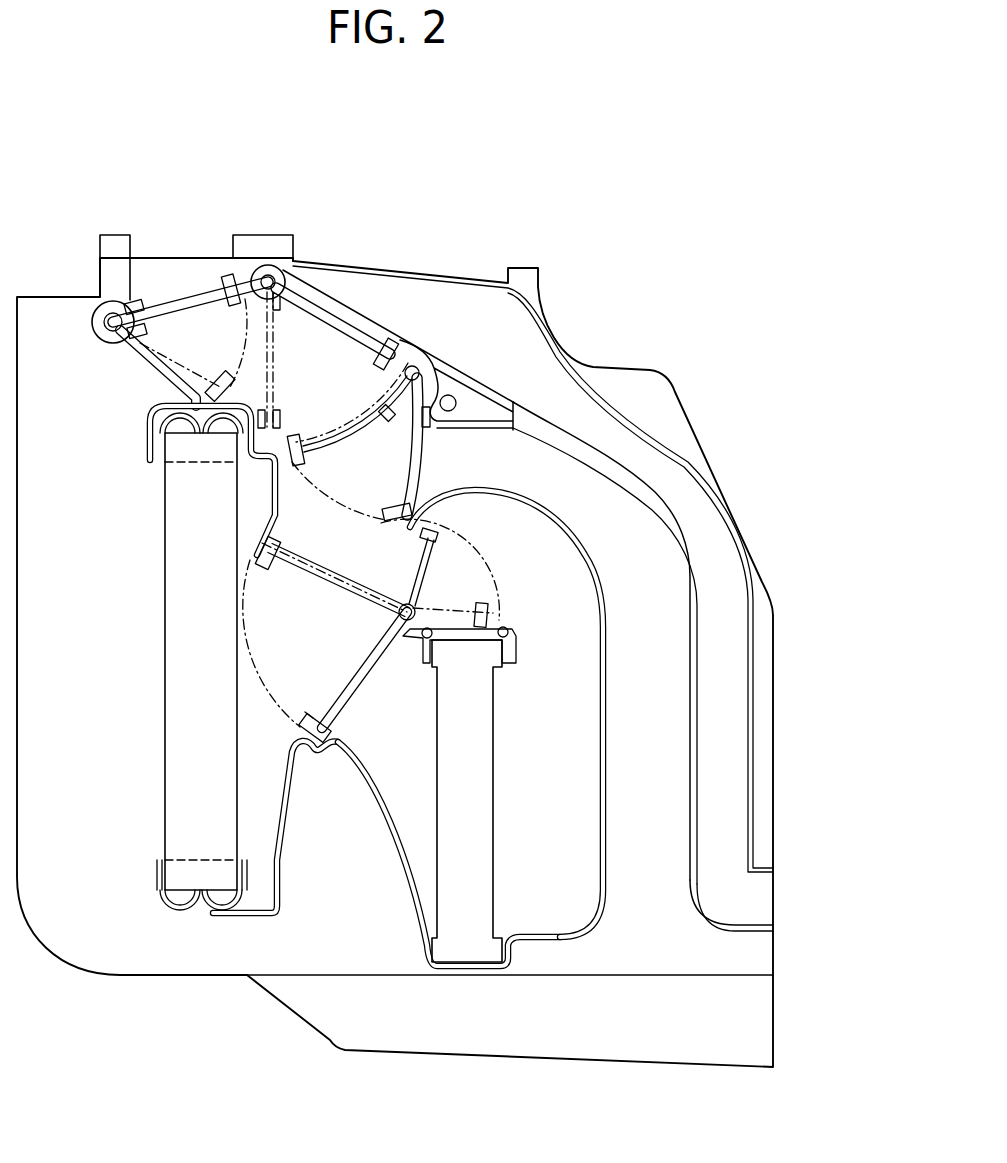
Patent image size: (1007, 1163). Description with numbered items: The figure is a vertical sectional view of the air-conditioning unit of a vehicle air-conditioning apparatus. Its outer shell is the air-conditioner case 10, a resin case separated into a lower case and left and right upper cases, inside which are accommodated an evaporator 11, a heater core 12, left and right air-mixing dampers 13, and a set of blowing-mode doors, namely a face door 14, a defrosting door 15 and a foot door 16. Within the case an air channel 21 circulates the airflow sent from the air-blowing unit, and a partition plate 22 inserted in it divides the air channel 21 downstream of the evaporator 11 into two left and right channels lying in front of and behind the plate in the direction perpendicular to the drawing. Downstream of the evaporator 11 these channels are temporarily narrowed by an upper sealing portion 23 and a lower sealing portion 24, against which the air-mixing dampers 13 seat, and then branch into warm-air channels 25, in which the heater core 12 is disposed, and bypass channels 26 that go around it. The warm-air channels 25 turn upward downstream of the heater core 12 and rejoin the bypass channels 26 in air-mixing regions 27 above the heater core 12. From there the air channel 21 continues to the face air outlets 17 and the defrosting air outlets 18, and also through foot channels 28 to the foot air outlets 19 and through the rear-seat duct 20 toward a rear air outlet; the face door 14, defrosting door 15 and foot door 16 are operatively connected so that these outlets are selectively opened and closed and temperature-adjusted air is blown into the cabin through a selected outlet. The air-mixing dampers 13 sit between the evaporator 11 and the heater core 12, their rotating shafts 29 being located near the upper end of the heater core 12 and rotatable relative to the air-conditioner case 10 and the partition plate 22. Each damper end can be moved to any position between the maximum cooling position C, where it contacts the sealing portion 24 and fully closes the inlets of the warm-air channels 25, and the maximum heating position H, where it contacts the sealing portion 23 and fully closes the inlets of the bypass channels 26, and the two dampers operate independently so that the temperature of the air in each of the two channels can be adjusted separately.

The air-conditioner case 10 is at (157, 977).
The evaporator 11 is at (173, 810).
The heater core 12 is at (478, 882).
The air-mixing dampers 13 is at (345, 697).
The face door 14 is at (367, 327).
The defrosting door 15 is at (193, 295).
The foot door 16 is at (415, 462).
The face air outlets 17 is at (330, 294).
The defrosting air outlets 18 is at (157, 283).
The foot air outlets 19 is at (655, 932).
The rear-seat duct 20 is at (735, 695).
The air channel 21 is at (255, 712).
The partition plate 22 is at (400, 847).
The upper sealing portion 23 is at (268, 528).
The lower sealing portion 24 is at (325, 743).
The warm-air channels 25 is at (550, 800).
The bypass channels 26 is at (293, 582).
The air-mixing regions 27 is at (277, 503).
The foot channels 28 is at (627, 517).
The rotating shafts 29 is at (420, 600).
The maximum heating position H is at (277, 548).
The maximum cooling position C is at (305, 698).